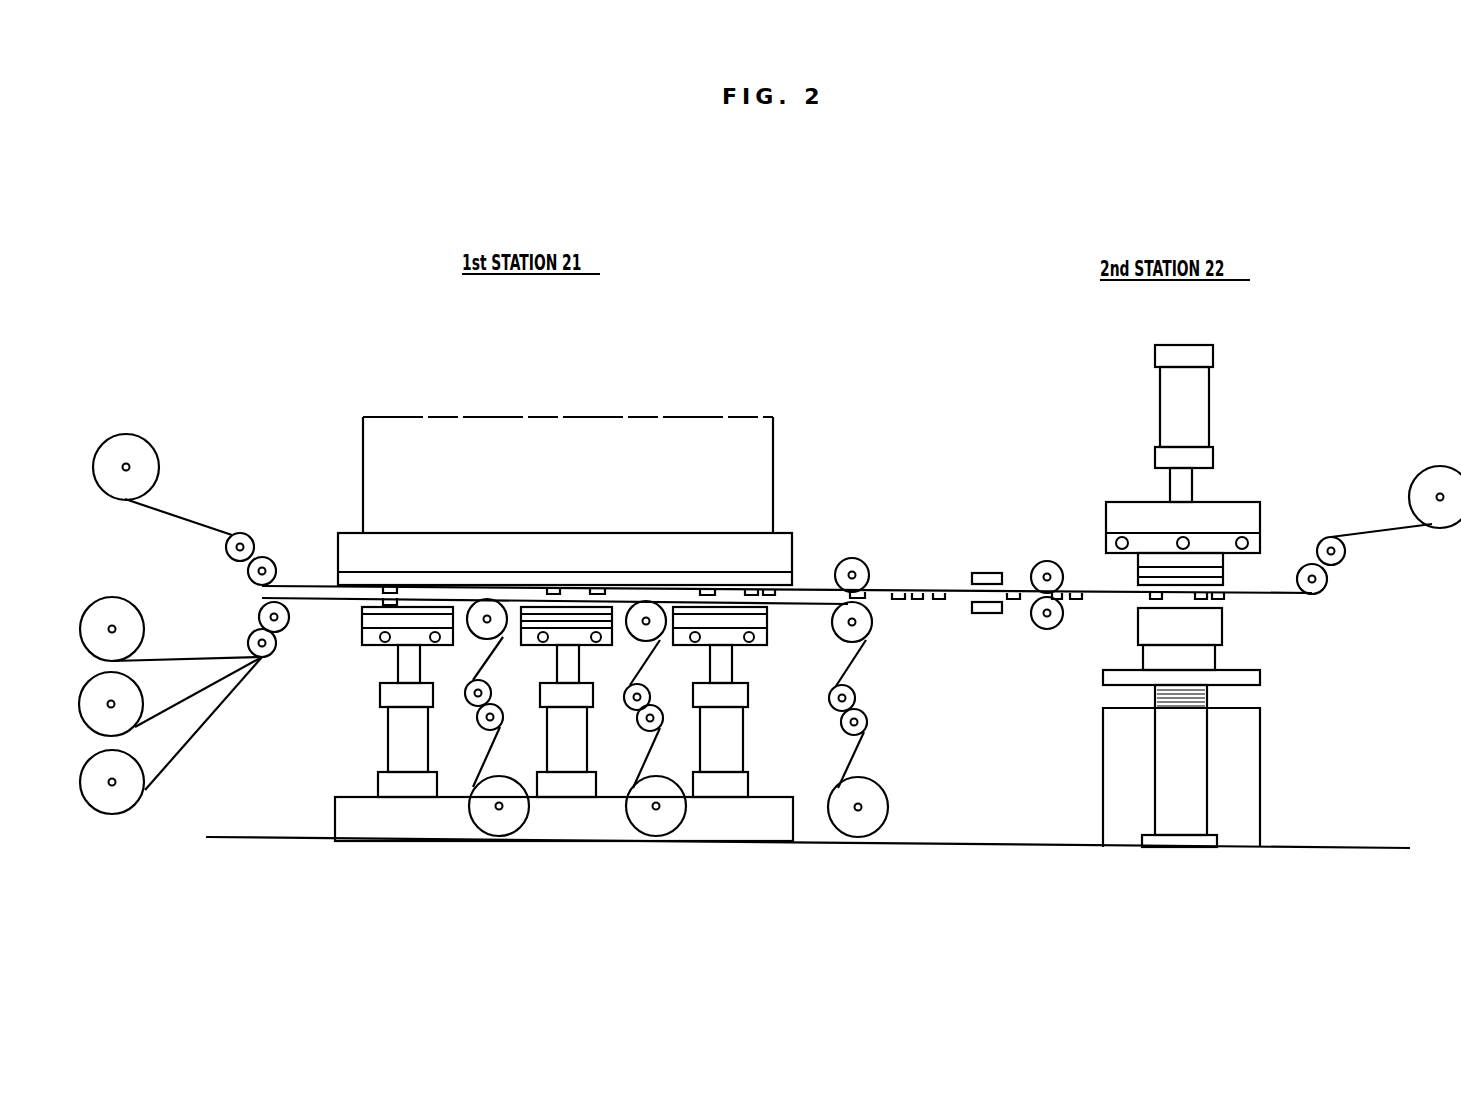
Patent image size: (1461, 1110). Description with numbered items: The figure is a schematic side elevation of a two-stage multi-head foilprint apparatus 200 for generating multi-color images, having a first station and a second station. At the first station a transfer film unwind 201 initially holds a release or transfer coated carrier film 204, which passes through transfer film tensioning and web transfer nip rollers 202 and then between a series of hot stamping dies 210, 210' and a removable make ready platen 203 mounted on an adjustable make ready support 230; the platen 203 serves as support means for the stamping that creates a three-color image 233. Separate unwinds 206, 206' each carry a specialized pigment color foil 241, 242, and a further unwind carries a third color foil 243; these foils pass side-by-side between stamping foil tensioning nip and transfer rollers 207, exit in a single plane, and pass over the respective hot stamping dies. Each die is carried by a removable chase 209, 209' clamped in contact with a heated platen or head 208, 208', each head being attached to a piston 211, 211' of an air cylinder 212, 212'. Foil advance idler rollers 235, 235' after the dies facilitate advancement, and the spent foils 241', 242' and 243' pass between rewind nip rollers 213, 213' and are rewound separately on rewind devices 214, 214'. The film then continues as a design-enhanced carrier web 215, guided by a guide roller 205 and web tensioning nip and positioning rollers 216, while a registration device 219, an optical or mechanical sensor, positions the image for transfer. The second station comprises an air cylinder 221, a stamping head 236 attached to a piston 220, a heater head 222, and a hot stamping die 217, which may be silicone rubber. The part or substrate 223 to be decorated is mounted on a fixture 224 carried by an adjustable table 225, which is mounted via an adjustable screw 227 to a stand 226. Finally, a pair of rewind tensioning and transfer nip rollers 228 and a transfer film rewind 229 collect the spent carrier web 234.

The two-stage multi-head foilprint apparatus 200 is at (858, 258).
The transfer film unwind 201 is at (138, 450).
The transfer film tensioning and web transfer nip rollers 202 is at (256, 541).
The removable make ready platen 203 is at (780, 548).
The transfer film 204 is at (178, 512).
The guide roller 205 is at (856, 560).
The unwind 206 is at (114, 613).
The unwind 206' is at (133, 704).
The stamping foil tensioning nip and transfer rollers 207 is at (260, 609).
The heated platen 208 is at (473, 642).
The heated platen 208' is at (583, 643).
The removable chase 209 is at (380, 662).
The removable chase 209' is at (566, 572).
The hot stamping die 210 is at (379, 640).
The hot stamping die 210' is at (578, 590).
The piston 211 is at (375, 685).
The piston 211' is at (590, 689).
The air cylinder 212 is at (386, 740).
The air cylinder 212' is at (585, 740).
The rewind nip rollers 213 is at (472, 716).
The rewind nip rollers 213' is at (658, 719).
The rewind device 214 is at (564, 828).
The rewind device 214' is at (664, 829).
The design-enhanced carrier web 215 is at (947, 590).
The web tensioning nip and positioning rollers 216 is at (1037, 568).
The hot stamping die 217 is at (1223, 568).
The registration device 219 is at (985, 572).
The piston 220 is at (1195, 490).
The air cylinder 221 is at (1200, 402).
The heater head 222 is at (1106, 545).
The part or substrate 223 is at (1150, 630).
The fixture 224 is at (1200, 660).
The adjustable table 225 is at (1262, 678).
The stand 226 is at (1260, 771).
The adjustable screw 227 is at (1197, 810).
The rewind tensioning and transfer nip rollers 228 is at (1344, 562).
The transfer film rewind 229 is at (1440, 480).
The make ready support 230 is at (775, 442).
The three-color image 233 is at (868, 597).
The spent carrier web 234 is at (1390, 528).
The foil advance idler roller 235 is at (493, 590).
The foil advance idler roller 235' is at (647, 592).
The stamping head 236 is at (1130, 515).
The specialized pigment color foil 241 is at (185, 643).
The spent specialized hot stamping foil 241' is at (471, 757).
The specialized pigment color foil 242 is at (204, 697).
The spent specialized hot stamping foil 242' is at (663, 758).
The specialized pigment color foil 243 is at (203, 727).
The spent specialized hot stamping foil 243' is at (831, 760).